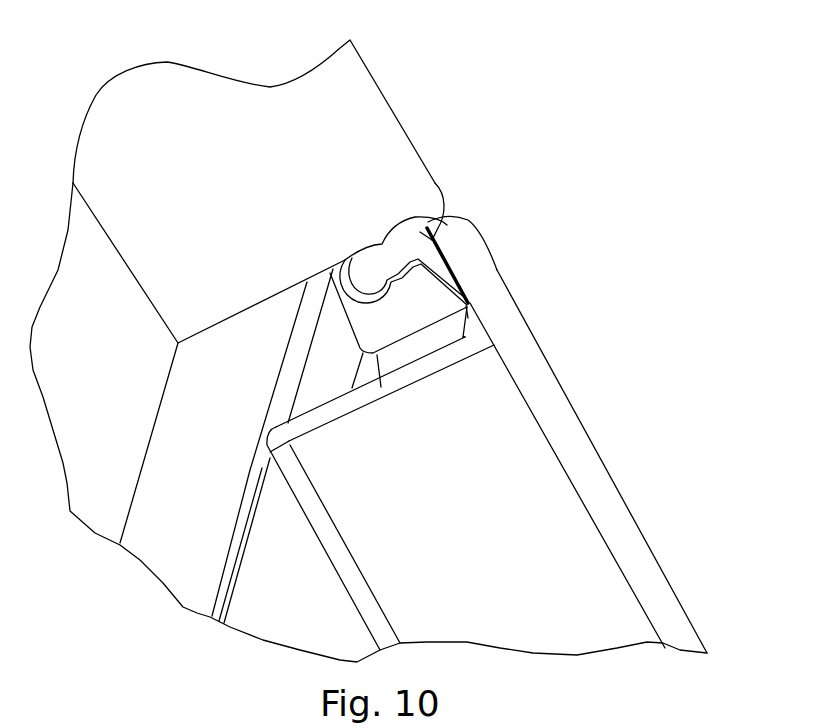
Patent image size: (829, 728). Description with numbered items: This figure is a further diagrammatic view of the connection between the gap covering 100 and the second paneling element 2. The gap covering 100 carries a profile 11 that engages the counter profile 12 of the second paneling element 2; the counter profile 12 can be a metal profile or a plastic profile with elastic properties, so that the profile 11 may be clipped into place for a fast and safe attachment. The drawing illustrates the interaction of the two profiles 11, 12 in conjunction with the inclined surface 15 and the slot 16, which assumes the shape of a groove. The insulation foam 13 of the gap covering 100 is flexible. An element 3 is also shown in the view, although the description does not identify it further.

The second paneling element 2 is at (217, 102).
The rail plate 3 is at (563, 413).
The profile 11 is at (427, 262).
The counter profile 12 is at (440, 303).
The insulation foam 13 is at (547, 466).
The inclined surface 15 is at (437, 292).
The slot 16 is at (415, 248).
The gap covering 100 is at (620, 298).